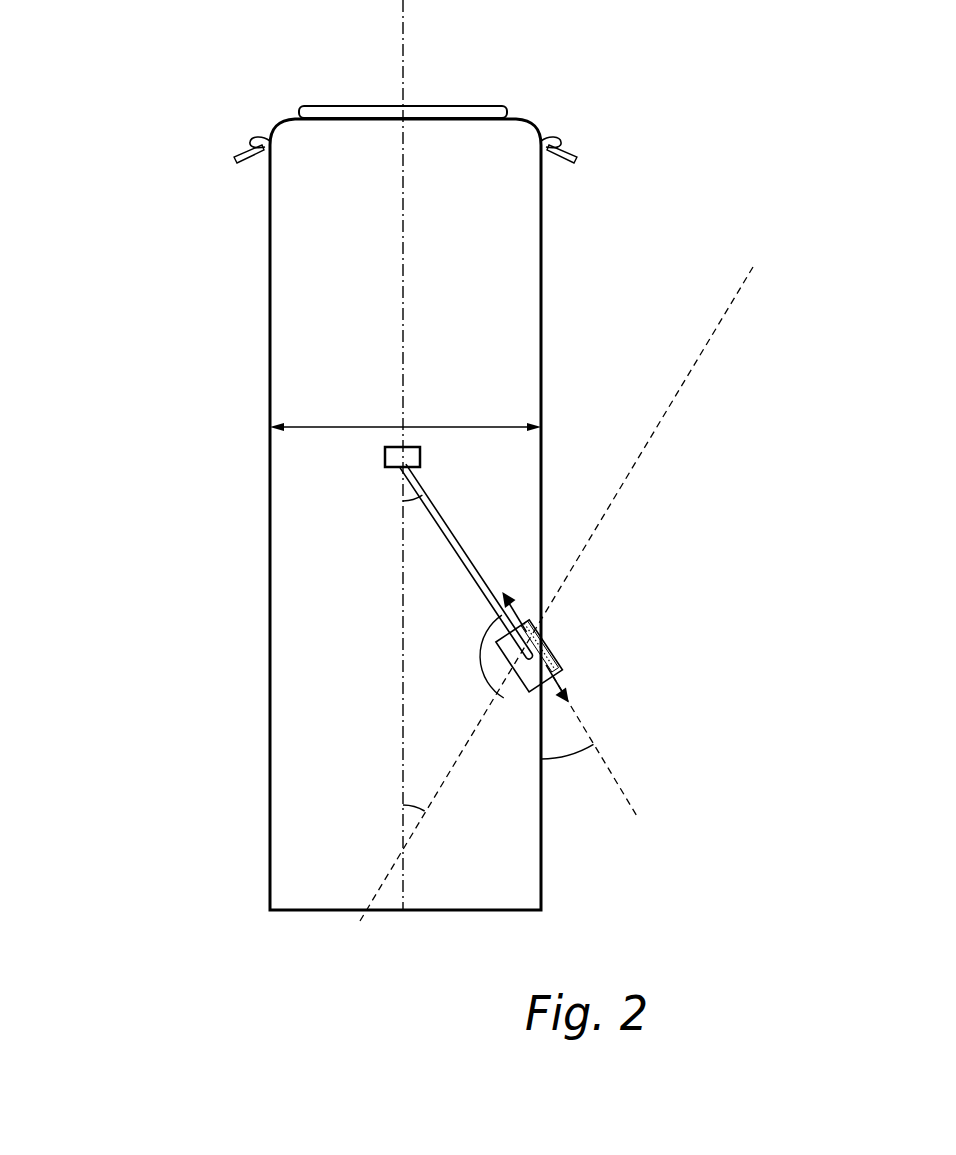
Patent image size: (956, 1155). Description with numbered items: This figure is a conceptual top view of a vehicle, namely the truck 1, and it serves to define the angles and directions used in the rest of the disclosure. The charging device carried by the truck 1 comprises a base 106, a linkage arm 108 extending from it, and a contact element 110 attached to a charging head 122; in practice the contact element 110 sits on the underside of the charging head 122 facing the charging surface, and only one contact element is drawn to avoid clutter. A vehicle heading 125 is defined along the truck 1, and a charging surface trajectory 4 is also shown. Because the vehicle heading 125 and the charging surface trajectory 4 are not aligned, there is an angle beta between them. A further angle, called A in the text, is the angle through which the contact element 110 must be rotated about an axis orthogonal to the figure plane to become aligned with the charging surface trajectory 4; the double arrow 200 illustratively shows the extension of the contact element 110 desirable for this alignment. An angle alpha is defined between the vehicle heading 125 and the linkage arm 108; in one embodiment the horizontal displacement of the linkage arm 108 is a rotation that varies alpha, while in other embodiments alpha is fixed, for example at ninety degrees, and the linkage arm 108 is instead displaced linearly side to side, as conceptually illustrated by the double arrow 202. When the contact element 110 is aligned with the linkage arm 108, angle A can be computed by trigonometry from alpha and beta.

The truck 1 is at (186, 219).
The vehicle heading 125 is at (403, 60).
The double arrow 202 is at (338, 425).
The base 106 is at (385, 457).
The linkage arm 108 is at (447, 517).
The contact element 110 is at (547, 645).
The charging surface trajectory 4 is at (720, 322).
The charging head 122 is at (598, 605).
The double arrow 200 is at (598, 688).